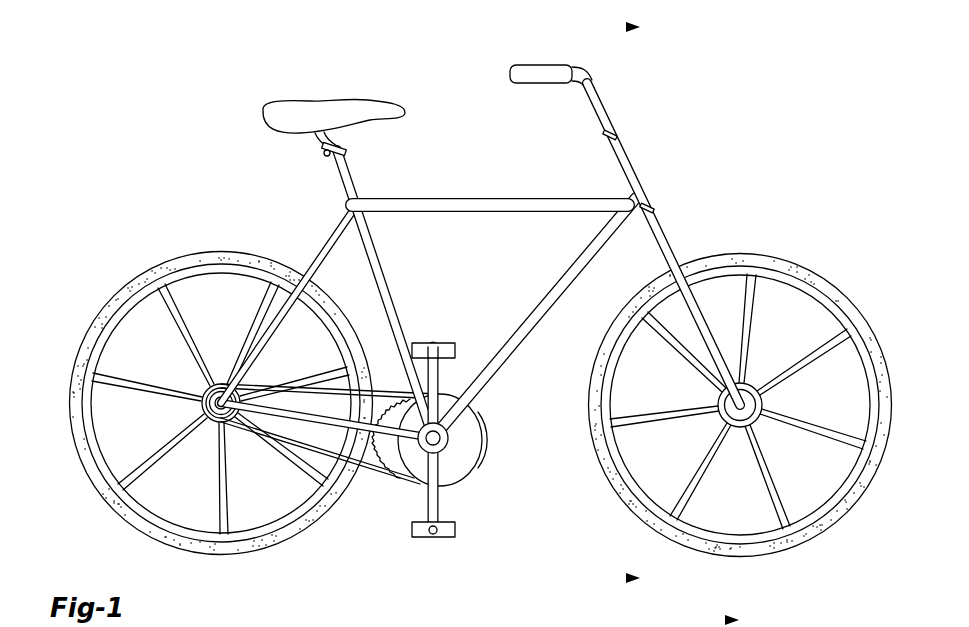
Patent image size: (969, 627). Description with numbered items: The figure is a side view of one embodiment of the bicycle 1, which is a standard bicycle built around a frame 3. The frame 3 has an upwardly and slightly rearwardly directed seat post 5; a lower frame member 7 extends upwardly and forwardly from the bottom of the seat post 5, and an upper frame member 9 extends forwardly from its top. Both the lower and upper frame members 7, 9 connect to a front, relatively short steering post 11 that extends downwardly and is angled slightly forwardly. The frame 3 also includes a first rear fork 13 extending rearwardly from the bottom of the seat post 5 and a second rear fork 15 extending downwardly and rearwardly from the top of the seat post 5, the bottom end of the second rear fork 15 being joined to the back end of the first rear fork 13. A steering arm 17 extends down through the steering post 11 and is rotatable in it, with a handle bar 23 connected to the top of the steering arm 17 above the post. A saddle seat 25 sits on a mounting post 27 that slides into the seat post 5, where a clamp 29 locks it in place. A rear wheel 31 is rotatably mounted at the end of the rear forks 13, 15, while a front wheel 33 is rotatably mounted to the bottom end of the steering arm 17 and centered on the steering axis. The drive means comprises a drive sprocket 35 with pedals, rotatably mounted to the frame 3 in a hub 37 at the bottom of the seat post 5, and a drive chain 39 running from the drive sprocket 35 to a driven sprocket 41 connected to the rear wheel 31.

The bicycle 1 is at (722, 172).
The frame 3 is at (398, 301).
The seat post 5 is at (400, 312).
The lower frame member 7 is at (537, 296).
The upper frame member 9 is at (490, 230).
The steering post 11 is at (633, 160).
The first rear fork 13 is at (378, 440).
The second rear fork 15 is at (325, 250).
The steering arm 17 is at (612, 120).
The handle bar 23 is at (518, 64).
The saddle seat 25 is at (318, 107).
The mounting post 27 is at (323, 146).
The clamp 29 is at (330, 153).
The rear wheel 31 is at (118, 295).
The front wheel 33 is at (838, 290).
The drive sprocket 35 is at (466, 456).
The hub 37 is at (446, 466).
The drive chain 39 is at (325, 455).
The driven sprocket 41 is at (200, 392).